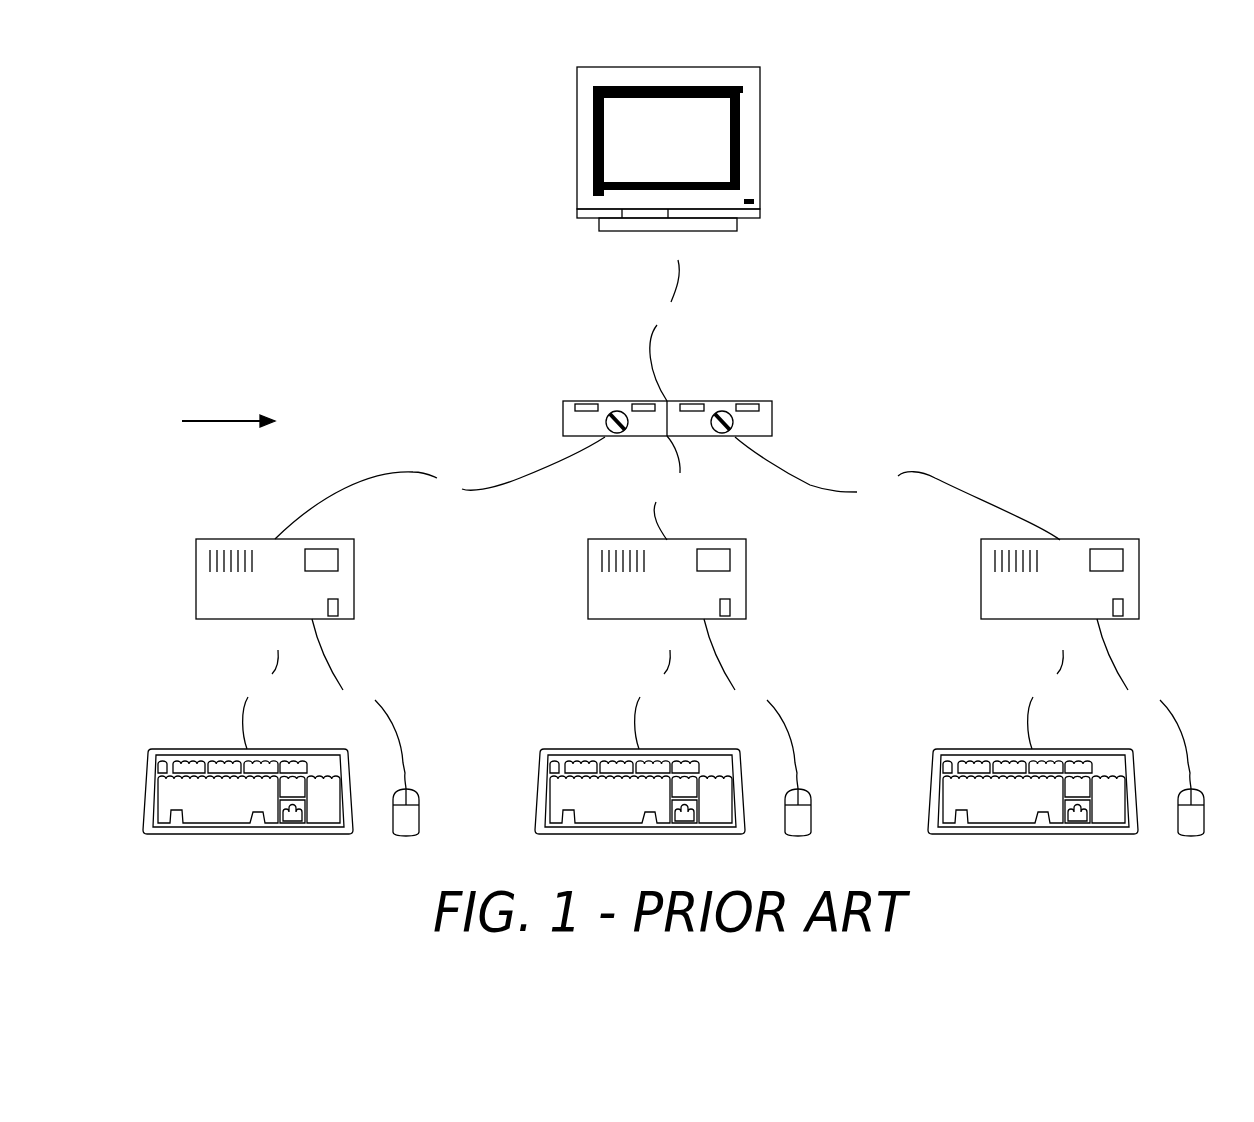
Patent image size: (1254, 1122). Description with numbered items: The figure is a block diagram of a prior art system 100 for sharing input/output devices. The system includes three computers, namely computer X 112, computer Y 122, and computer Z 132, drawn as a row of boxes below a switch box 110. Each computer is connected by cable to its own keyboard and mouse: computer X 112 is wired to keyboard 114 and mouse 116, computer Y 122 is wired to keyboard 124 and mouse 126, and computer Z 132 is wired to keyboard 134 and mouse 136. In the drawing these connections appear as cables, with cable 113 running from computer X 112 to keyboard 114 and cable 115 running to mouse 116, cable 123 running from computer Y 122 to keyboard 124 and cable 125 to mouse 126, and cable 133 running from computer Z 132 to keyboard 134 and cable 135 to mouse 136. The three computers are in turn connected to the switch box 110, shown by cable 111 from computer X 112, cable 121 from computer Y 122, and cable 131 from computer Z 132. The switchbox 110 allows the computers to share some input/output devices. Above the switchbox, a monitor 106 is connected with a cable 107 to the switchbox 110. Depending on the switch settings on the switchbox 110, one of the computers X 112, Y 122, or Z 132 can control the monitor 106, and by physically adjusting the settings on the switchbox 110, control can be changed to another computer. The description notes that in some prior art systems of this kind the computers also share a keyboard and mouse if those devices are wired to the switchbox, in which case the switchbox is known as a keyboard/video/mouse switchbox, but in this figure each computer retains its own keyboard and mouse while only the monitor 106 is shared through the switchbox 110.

The prior art system 100 is at (211, 421).
The monitor 106 is at (669, 231).
The monitor cable 107 is at (666, 330).
The switch box 110 is at (785, 416).
The cable to computer X 111 is at (440, 488).
The computer X 112 is at (276, 619).
The keyboard cable 113 is at (261, 699).
The keyboard 114 is at (248, 805).
The mouse cable 115 is at (359, 704).
The mouse 116 is at (406, 825).
The cable to computer Y 121 is at (667, 488).
The computer Y 122 is at (667, 592).
The keyboard cable 123 is at (653, 699).
The keyboard 124 is at (640, 805).
The mouse cable 125 is at (751, 704).
The mouse 126 is at (798, 825).
The cable to computer Z 131 is at (897, 488).
The computer Z 132 is at (1060, 592).
The keyboard cable 133 is at (1046, 699).
The keyboard 134 is at (1033, 805).
The mouse cable 135 is at (1144, 704).
The mouse 136 is at (1191, 825).